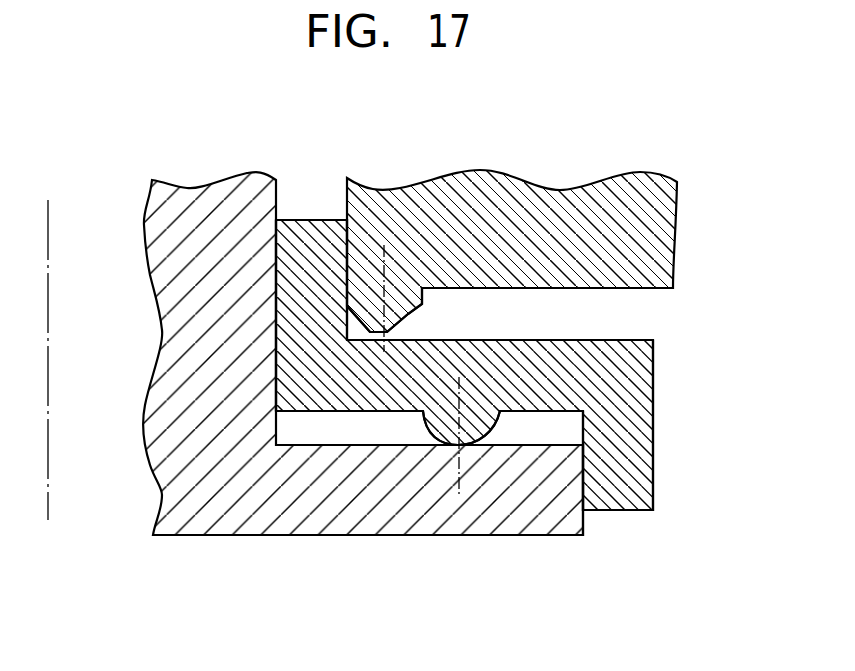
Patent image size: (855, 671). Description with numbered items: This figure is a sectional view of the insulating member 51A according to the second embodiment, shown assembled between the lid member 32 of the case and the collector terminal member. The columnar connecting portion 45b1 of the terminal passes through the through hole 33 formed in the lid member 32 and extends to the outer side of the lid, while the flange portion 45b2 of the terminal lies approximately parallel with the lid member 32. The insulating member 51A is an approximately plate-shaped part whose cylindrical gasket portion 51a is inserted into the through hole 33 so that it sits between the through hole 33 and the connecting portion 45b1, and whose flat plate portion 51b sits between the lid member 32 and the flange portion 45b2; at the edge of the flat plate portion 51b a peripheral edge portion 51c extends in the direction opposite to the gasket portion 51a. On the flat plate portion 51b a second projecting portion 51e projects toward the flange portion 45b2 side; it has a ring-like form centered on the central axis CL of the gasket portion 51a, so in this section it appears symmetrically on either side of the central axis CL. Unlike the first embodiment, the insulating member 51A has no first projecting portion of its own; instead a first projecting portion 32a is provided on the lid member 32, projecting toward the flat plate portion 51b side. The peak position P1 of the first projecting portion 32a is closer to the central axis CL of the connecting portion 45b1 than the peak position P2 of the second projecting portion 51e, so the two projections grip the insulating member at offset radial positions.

The lid member 32 is at (620, 228).
The first projecting portion 32a is at (395, 313).
The through hole 33 is at (344, 250).
The connecting portion 45b1 is at (207, 315).
The flange portion 45b2 is at (543, 493).
The insulating member 51A is at (710, 371).
The gasket portion 51a is at (310, 275).
The flat plate portion 51b is at (542, 377).
The peripheral edge portion 51c is at (622, 462).
The second projecting portion 51e is at (445, 425).
The peak position of the first projecting portion P1 is at (386, 275).
The peak position of the second projecting portion P2 is at (458, 480).
The central axis CL is at (50, 226).